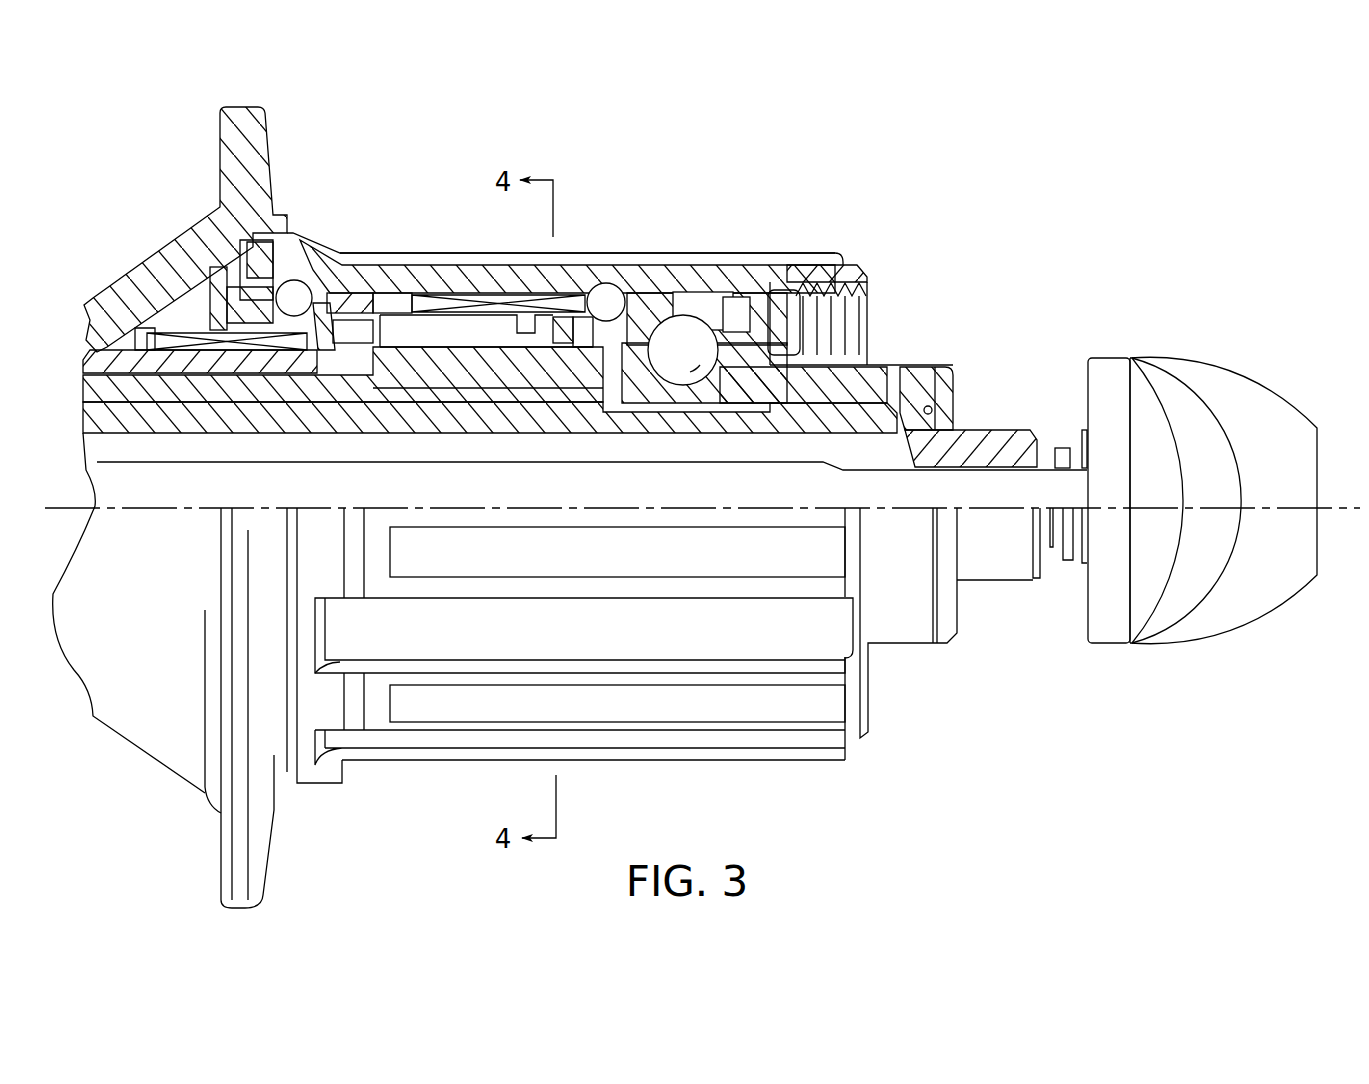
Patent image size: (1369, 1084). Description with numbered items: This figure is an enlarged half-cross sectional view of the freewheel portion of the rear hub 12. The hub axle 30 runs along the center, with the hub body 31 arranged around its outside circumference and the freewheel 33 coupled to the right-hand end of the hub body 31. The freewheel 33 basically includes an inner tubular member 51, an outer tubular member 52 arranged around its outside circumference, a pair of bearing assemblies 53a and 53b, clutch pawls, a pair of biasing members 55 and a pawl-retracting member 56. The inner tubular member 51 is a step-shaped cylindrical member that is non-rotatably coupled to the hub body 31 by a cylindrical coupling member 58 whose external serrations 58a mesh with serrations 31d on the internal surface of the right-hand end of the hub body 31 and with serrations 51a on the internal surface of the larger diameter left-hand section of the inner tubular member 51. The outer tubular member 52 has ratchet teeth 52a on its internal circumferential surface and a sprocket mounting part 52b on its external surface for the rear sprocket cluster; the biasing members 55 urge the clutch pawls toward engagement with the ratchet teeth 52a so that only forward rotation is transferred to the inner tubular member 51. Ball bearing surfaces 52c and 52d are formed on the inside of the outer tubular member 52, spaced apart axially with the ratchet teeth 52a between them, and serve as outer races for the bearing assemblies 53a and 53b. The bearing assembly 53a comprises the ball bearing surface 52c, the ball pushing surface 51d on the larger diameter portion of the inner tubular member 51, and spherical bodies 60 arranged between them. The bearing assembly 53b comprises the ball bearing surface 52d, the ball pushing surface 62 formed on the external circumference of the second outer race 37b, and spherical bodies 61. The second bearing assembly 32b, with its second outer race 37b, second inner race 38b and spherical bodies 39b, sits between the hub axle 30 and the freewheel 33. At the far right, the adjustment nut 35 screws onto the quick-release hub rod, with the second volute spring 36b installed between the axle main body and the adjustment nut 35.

The rear hub 12 is at (904, 178).
The hub axle 30 is at (865, 397).
The hub body 31 is at (151, 259).
The serrations 31d is at (178, 330).
The second bearing assembly 32b is at (796, 296).
The freewheel 33 is at (661, 225).
The adjustment nut 35 is at (1210, 415).
The second volute spring 36b is at (1053, 552).
The second outer race 37b is at (737, 326).
The second inner race 38b is at (737, 388).
The spherical bodies 39b is at (680, 360).
The inner tubular member 51 is at (540, 392).
The serrations 51a is at (277, 253).
The ball pushing surface 51d is at (292, 318).
The outer tubular member 52 is at (578, 263).
The ratchet teeth 52a is at (500, 303).
The sprocket mounting part 52b is at (435, 252).
The ball bearing surface 52c is at (358, 297).
The ball bearing surface 52d is at (606, 303).
The bearing assembly 53a is at (316, 262).
The bearing assembly 53b is at (692, 300).
The biasing members 55 is at (541, 380).
The pawl-retracting member 56 is at (400, 295).
The coupling member 58 is at (160, 363).
The serrations 58a is at (170, 340).
The spherical bodies 60 is at (350, 342).
The spherical bodies 61 is at (598, 330).
The ball pushing surface 62 is at (636, 291).